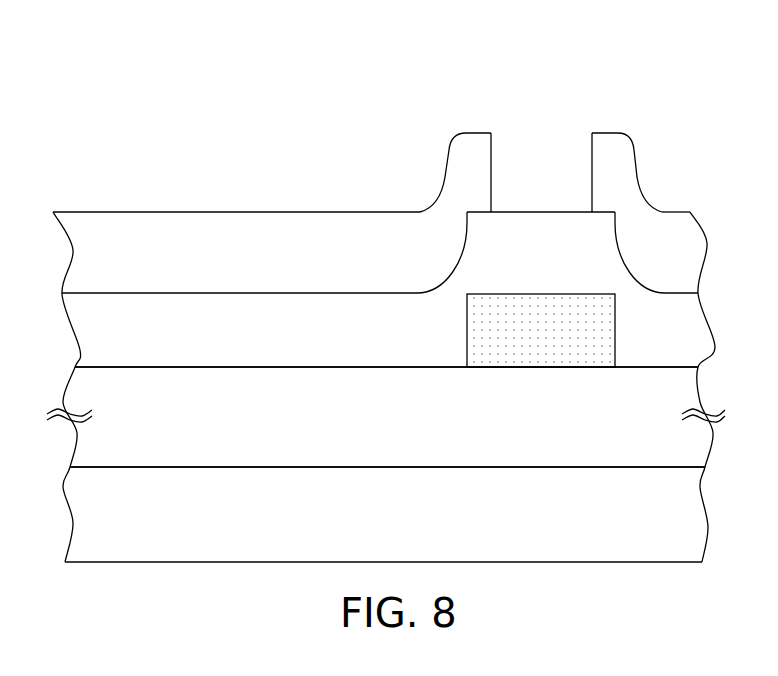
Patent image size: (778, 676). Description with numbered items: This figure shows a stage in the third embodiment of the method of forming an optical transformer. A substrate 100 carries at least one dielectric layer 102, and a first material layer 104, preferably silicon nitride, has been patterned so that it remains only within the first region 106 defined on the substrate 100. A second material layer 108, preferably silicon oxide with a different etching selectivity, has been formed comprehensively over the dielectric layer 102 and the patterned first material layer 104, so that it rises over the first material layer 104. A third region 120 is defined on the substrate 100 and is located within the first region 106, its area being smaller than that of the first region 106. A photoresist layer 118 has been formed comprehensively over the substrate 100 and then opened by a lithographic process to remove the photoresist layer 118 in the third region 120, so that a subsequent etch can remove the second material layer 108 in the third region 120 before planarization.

The substrate 100 is at (413, 533).
The dielectric layer 102 is at (413, 437).
The first material layer 104 is at (562, 343).
The first region 106 is at (615, 78).
The second material layer 108 is at (413, 340).
The photoresist layer 118 is at (413, 264).
The third region 120 is at (592, 130).